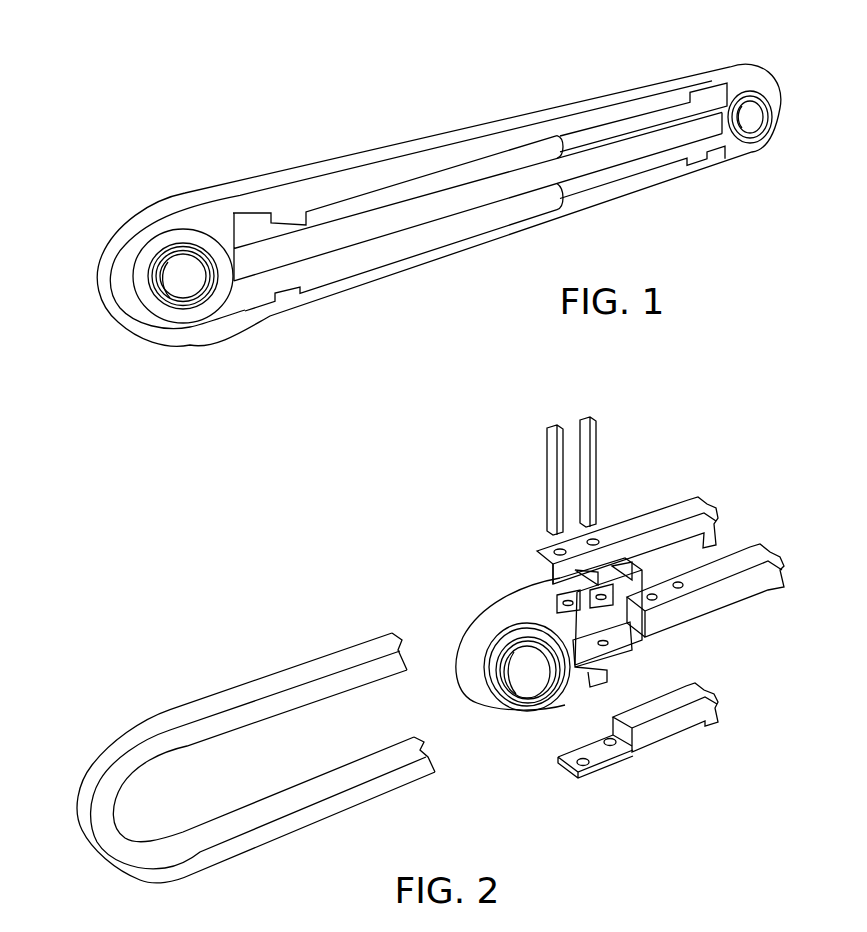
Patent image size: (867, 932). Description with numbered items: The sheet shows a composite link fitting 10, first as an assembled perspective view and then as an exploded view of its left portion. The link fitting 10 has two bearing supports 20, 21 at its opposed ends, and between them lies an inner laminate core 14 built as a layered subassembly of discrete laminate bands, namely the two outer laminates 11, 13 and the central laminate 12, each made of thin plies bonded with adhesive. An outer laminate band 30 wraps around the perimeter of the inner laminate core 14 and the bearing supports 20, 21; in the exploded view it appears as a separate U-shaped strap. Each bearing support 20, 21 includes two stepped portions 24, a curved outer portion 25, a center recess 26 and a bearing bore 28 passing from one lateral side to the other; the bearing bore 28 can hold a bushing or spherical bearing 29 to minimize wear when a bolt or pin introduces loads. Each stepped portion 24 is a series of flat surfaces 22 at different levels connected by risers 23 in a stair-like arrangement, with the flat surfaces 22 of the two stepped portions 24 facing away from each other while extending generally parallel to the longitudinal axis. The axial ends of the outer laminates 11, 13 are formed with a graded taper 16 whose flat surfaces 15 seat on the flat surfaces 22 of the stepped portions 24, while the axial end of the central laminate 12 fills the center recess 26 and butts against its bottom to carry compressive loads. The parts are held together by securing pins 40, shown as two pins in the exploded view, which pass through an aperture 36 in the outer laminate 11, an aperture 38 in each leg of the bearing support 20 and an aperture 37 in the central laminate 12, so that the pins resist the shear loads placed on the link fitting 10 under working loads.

In FIG. 1, the composite link fitting 10 is at (470, 105).
In FIG. 2, the outer laminate band 11 is at (688, 538).
In FIG. 1, the central laminate 12 is at (397, 219).
In FIG. 2, the central laminate 12 is at (740, 608).
In FIG. 1, the outer laminate band 13 is at (607, 183).
In FIG. 2, the outer laminate band 13 is at (705, 718).
In FIG. 1, the inner laminate core 14 is at (563, 168).
In FIG. 2, the flat surfaces 15 is at (595, 768).
In FIG. 2, the graded taper 16 is at (672, 760).
In FIG. 1, the bearing support 20 is at (230, 304).
In FIG. 2, the bearing support 20 is at (472, 645).
In FIG. 1, the bearing support 21 is at (723, 147).
In FIG. 1, the flat surfaces 22 is at (290, 218).
In FIG. 2, the flat surfaces 22 is at (598, 606).
In FIG. 1, the risers 23 is at (242, 214).
In FIG. 1, the stepped portion 24 is at (308, 207).
In FIG. 2, the stepped portion 24 is at (645, 655).
In FIG. 1, the curved outer portion 25 is at (142, 286).
In FIG. 1, the center recess 26 is at (298, 261).
In FIG. 2, the center recess 26 is at (590, 650).
In FIG. 1, the bearing bore 28 is at (157, 245).
In FIG. 2, the bearing bore 28 is at (520, 714).
In FIG. 1, the spherical bearing 29 is at (197, 286).
In FIG. 2, the spherical bearing 29 is at (527, 672).
In FIG. 1, the outer laminate band 30 is at (270, 310).
In FIG. 2, the outer laminate band 30 is at (253, 695).
In FIG. 2, the aperture 36 is at (583, 538).
In FIG. 2, the aperture 37 is at (660, 592).
In FIG. 2, the aperture 38 is at (567, 627).
In FIG. 2, the securing pins 40 is at (585, 427).